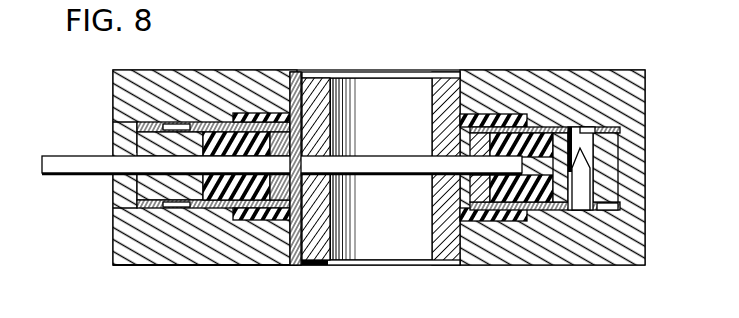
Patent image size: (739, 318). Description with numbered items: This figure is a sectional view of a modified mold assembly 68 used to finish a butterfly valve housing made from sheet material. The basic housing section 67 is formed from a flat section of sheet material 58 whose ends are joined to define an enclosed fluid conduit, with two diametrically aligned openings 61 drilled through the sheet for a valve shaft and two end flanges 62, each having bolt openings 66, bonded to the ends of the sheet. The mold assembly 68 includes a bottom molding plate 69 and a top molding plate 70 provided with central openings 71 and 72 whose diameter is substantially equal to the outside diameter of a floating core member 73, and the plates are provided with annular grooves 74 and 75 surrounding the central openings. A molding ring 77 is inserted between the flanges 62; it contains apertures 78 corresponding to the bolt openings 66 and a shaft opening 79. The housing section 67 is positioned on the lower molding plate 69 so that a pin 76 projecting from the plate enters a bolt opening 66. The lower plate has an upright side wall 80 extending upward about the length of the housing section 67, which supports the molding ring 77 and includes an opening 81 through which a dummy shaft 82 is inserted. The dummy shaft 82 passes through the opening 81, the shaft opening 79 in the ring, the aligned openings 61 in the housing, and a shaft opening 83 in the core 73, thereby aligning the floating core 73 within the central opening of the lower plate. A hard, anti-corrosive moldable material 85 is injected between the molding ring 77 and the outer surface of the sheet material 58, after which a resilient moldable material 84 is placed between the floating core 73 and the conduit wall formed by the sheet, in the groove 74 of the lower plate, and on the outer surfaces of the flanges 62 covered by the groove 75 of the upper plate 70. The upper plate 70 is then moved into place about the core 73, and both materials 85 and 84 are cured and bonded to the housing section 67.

The sheet material 58 is at (456, 156).
The diametrically aligned openings 61 is at (292, 74).
The end flanges 62 is at (610, 127).
The bolt openings 66 is at (575, 130).
The basic housing section 67 is at (289, 180).
The mold assembly 68 is at (90, 254).
The bottom molding plate 69 is at (155, 252).
The top molding plate 70 is at (218, 78).
The central opening 71 is at (315, 264).
The central opening 72 is at (316, 78).
The floating core member 73 is at (437, 105).
The annular groove 74 is at (480, 225).
The annular groove 75 is at (470, 121).
The pin 76 is at (582, 183).
The molding ring 77 is at (142, 188).
The apertures 78 is at (591, 146).
The shaft opening 79 is at (114, 152).
The upright side wall 80 is at (134, 126).
The opening 81 is at (116, 185).
The dummy shaft 82 is at (57, 155).
The shaft opening 83 is at (331, 144).
The resilient moldable material 84 is at (463, 206).
The moldable material 85 is at (533, 130).